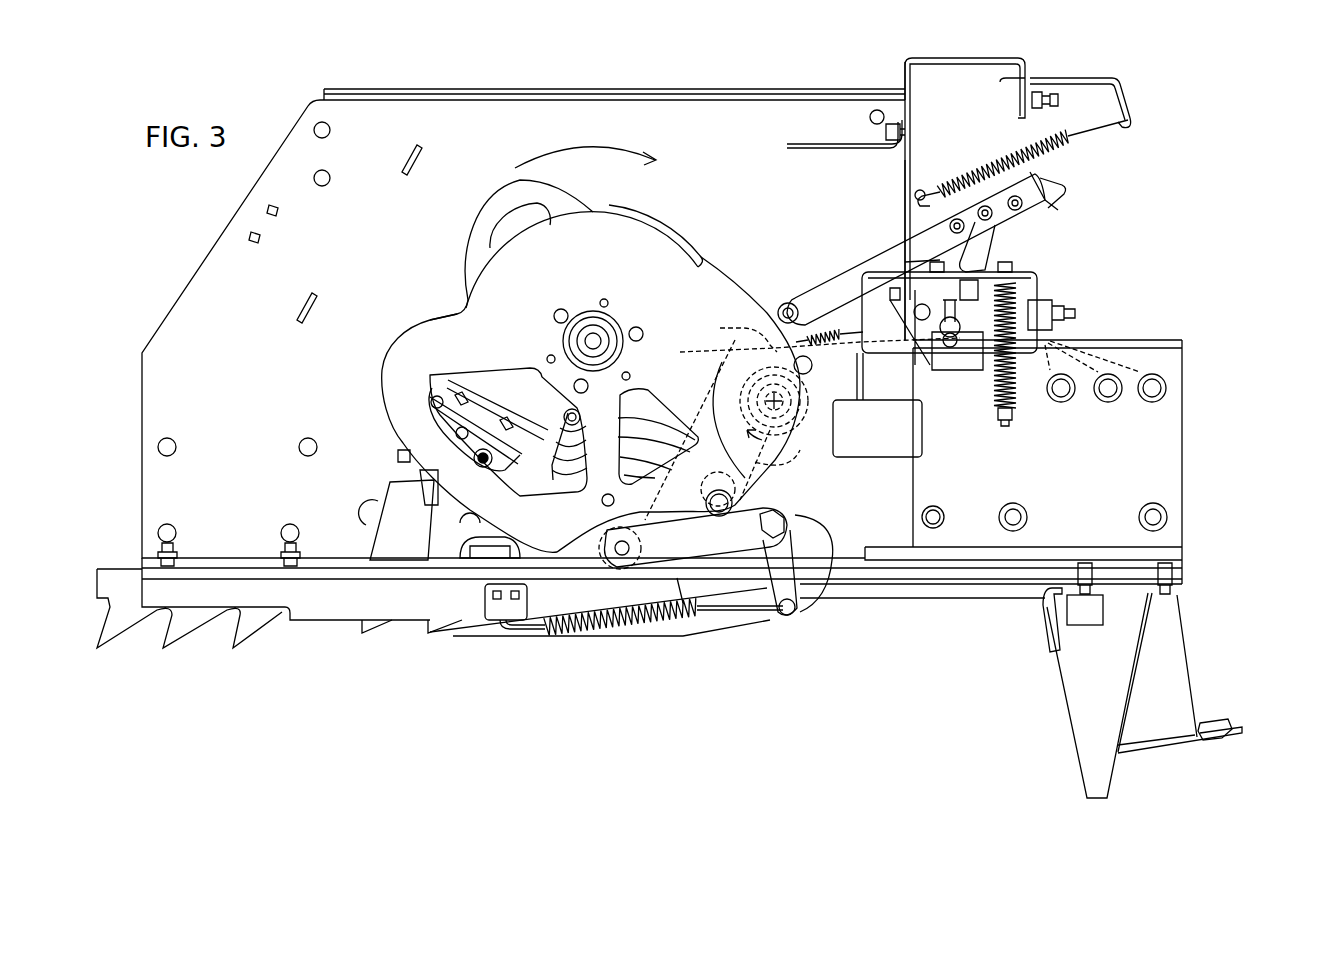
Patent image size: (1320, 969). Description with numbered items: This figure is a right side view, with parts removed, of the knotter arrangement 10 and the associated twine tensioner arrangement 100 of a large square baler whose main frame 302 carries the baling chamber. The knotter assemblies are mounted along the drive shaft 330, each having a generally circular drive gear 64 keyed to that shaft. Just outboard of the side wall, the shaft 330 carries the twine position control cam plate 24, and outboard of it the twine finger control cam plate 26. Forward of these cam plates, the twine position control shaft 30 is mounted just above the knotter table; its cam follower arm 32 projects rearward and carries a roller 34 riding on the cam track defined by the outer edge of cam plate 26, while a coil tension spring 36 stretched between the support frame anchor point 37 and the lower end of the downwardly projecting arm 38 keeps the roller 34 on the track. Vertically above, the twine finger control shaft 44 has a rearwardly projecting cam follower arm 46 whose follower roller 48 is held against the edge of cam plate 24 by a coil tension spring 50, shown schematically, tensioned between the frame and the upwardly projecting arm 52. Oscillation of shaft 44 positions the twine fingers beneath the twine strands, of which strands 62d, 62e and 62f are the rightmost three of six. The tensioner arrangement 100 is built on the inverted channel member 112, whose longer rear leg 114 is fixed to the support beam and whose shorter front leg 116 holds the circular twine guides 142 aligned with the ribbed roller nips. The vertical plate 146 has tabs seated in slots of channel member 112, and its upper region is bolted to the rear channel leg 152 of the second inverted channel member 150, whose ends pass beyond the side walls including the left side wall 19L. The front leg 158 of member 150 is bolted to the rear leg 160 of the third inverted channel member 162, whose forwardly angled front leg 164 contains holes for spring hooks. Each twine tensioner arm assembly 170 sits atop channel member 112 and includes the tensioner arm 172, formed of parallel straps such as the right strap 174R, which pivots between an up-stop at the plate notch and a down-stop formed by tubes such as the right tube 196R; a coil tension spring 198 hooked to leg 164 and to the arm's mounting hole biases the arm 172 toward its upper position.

The knotter arrangement 10 is at (592, 128).
The left side wall 19L is at (380, 262).
The twine position control cam plate 24 is at (505, 180).
The twine finger control cam plate 26 is at (428, 322).
The twine position control shaft 30 is at (818, 527).
The cam follower arm 32 is at (726, 542).
The roller 34 is at (635, 547).
The coil tension spring 36 is at (633, 628).
The support frame anchor point 37 is at (508, 612).
The arm 38 is at (788, 582).
The twine finger control shaft 44 is at (752, 403).
The cam follower arm 46 is at (775, 465).
The follower roller 48 is at (745, 490).
The coil tension spring 50 is at (812, 330).
The arm 52 is at (820, 333).
The twine strand 62d is at (1150, 405).
The twine strand 62e is at (1098, 405).
The twine strand 62f is at (1050, 405).
The drive gear 64 is at (648, 212).
The twine tensioner arrangement 100 is at (1050, 252).
The inverted channel member 112 is at (1047, 277).
The rear leg 114 is at (858, 375).
The front leg 116 is at (1045, 293).
The circular twine guides 142 is at (1045, 330).
The vertical transversely extending plate 146 is at (903, 172).
The second inverted channel member 150 is at (975, 43).
The rear channel leg 152 is at (903, 80).
The front leg 158 is at (1000, 76).
The rear leg 160 is at (1042, 92).
The third inverted channel member 162 is at (1078, 68).
The forwardly angled front leg 164 is at (1130, 100).
The twine tensioner arm assembly 170 is at (1065, 175).
The tensioner arm 172 is at (849, 240).
The right strap 174R is at (788, 278).
The right tube 196R is at (774, 326).
The coil tension spring 198 is at (985, 160).
The main frame 302 is at (1035, 625).
The drive shaft 330 is at (575, 343).